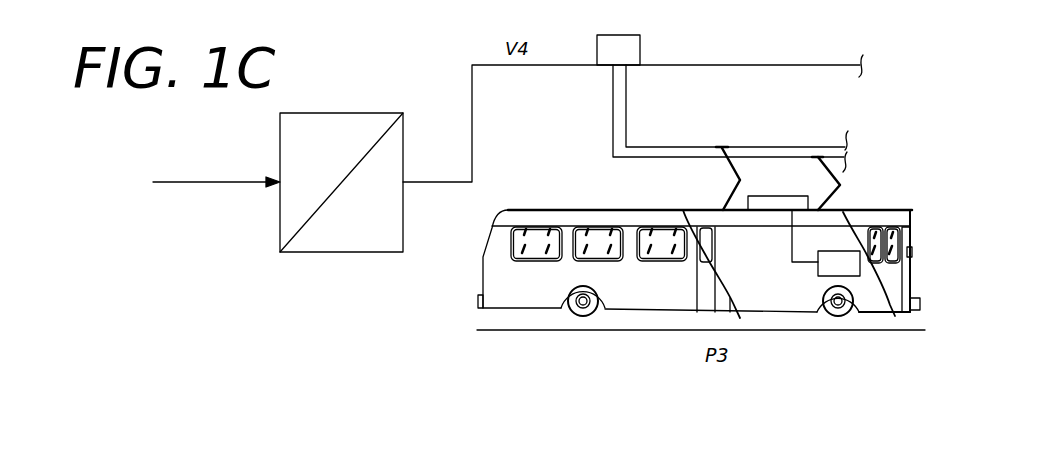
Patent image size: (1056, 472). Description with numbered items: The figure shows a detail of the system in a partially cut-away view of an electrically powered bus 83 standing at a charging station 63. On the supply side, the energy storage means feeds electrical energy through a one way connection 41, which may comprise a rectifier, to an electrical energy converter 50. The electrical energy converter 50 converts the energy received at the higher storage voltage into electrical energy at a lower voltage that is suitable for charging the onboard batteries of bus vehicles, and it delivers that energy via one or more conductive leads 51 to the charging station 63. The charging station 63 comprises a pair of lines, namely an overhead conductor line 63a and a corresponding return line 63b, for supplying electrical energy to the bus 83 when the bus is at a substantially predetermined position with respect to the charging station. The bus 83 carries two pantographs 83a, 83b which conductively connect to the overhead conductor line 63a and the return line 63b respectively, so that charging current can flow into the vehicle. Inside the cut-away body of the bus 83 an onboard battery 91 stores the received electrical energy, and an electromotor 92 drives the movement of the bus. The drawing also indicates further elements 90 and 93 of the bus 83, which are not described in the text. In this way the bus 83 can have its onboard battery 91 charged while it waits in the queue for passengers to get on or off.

The one way connection 41 is at (205, 182).
The electrical energy converter 50 is at (338, 237).
The conductive lead 51 is at (435, 182).
The charging station 63 is at (618, 50).
The overhead conductor line 63a is at (805, 146).
The return line 63b is at (612, 124).
The electrically powered bus 83 is at (625, 287).
The pantograph 83a is at (738, 174).
The pantograph 83b is at (840, 190).
The drive wheel / motor 90 is at (842, 316).
The onboard battery 91 is at (773, 200).
The electromotor 92 is at (845, 265).
The on-board power controller 93 is at (792, 233).